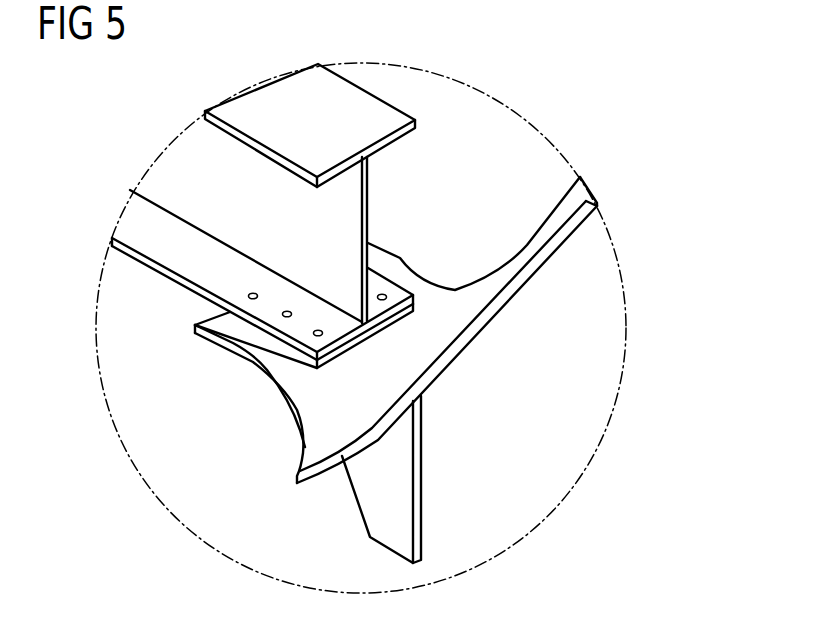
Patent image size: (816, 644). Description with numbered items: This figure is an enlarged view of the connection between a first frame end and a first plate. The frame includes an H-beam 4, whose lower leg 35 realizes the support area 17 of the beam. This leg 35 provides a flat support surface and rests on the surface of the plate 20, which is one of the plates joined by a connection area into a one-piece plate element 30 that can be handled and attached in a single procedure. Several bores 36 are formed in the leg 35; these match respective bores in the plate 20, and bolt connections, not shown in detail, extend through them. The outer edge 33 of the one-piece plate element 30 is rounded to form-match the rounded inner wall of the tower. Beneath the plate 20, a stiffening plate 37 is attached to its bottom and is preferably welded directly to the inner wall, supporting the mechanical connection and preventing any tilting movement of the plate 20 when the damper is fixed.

The H-beam 4 is at (290, 92).
The support area 17 is at (130, 222).
The plate 20 is at (311, 445).
The one-piece plate element 30 is at (574, 250).
The outer edge 33 is at (585, 200).
The lower leg 35 is at (129, 246).
The bores 36 is at (318, 333).
The stiffening plate 37 is at (425, 538).